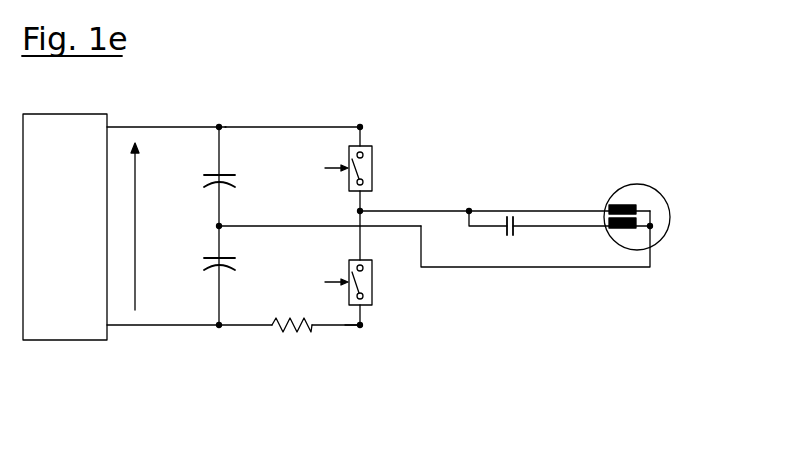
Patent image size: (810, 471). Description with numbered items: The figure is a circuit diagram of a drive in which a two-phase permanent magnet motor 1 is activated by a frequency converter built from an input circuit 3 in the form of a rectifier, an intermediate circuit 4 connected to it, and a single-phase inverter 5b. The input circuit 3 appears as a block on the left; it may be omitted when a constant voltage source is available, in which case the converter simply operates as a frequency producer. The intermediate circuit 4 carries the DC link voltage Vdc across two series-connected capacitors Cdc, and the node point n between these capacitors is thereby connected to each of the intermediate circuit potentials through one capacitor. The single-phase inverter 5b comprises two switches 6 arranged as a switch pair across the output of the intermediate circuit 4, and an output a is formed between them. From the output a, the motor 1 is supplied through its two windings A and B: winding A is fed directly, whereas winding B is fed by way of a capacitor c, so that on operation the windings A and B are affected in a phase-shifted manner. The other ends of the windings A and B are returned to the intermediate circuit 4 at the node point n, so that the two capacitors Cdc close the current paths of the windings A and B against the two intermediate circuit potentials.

The two-phase permanent magnet motor 1 is at (680, 220).
The input circuit 3 is at (72, 180).
The intermediate circuit 4 is at (273, 172).
The single-phase inverter 5b is at (371, 333).
The switches 6 is at (367, 148).
The output a is at (362, 209).
The node point n is at (222, 228).
The capacitor c is at (512, 212).
The winding A is at (628, 205).
The winding B is at (637, 228).
The DC capacitor Cdc is at (204, 231).
The DC voltage Vdc is at (153, 226).